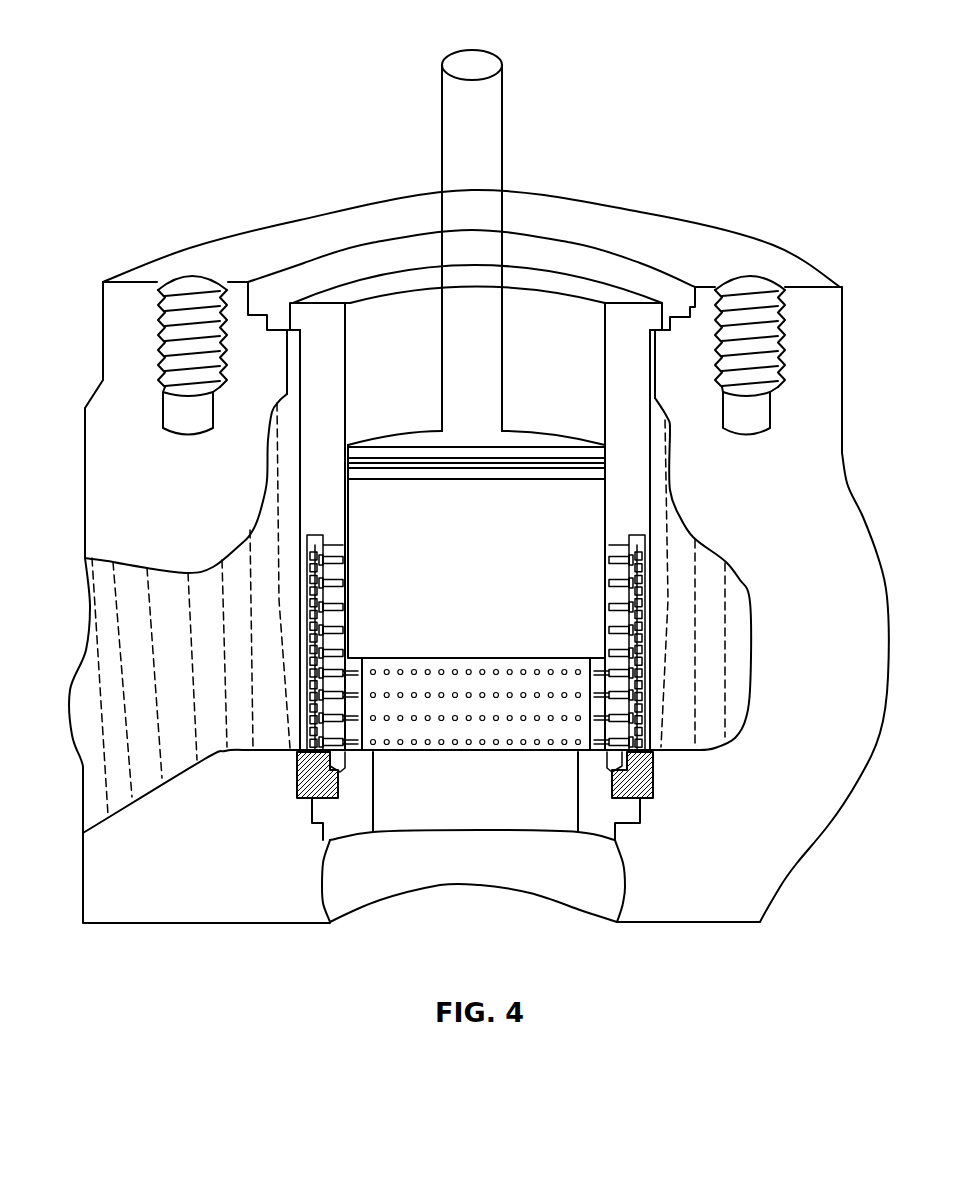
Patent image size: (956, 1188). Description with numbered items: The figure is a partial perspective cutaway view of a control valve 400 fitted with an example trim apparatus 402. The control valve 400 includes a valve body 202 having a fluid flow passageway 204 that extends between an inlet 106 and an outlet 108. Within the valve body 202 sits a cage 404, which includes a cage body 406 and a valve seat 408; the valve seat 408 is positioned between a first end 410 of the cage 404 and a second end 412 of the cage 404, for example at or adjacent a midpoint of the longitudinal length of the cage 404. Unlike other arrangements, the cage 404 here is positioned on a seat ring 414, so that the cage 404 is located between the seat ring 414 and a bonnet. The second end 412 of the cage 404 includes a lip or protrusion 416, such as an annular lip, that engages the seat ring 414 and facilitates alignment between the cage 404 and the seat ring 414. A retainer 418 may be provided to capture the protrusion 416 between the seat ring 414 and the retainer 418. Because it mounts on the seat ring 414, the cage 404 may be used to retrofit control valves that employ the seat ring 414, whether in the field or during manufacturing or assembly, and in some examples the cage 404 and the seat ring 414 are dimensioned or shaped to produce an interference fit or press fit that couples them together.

The control valve 400 is at (186, 148).
The trim apparatus 402 is at (523, 390).
The cage 404 is at (618, 312).
The cage body 406 is at (638, 493).
The valve seat 408 is at (598, 658).
The first end 410 is at (333, 298).
The second end 412 is at (543, 752).
The seat ring 414 is at (362, 797).
The lip or protrusion 416 is at (613, 752).
The retainer 418 is at (302, 798).
The valve body 202 is at (103, 433).
The fluid flow passageway 204 is at (220, 660).
The inlet 106 is at (88, 602).
The outlet 108 is at (445, 890).